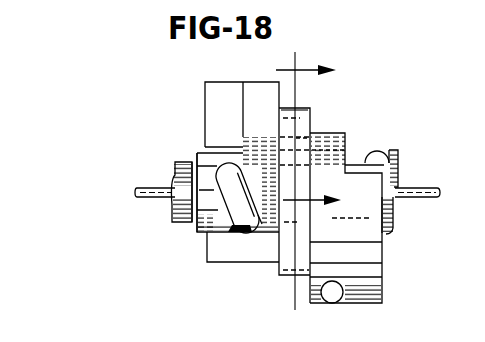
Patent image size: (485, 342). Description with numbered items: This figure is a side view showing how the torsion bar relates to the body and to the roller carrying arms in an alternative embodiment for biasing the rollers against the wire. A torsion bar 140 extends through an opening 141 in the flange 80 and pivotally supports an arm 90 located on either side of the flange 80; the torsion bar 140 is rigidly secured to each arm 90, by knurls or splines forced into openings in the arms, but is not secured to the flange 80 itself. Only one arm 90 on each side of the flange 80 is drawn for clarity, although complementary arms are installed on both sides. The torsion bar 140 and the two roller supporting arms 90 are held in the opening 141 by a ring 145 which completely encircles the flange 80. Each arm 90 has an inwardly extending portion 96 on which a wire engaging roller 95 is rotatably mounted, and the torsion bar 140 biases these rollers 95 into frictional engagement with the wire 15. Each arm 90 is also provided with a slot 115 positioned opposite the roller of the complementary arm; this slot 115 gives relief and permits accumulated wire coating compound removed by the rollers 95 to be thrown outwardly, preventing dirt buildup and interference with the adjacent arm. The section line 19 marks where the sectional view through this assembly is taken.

The wire 15 is at (146, 189).
The section line 19- 19 is at (308, 183).
The flange 80 is at (304, 134).
The arm 90 is at (258, 84).
The wire engaging roller 95 is at (237, 206).
The inwardly extending portion 96 is at (274, 212).
The slot 115 is at (333, 293).
The torsion bar 140 is at (348, 152).
The opening 141 is at (313, 130).
The ring 145 is at (303, 107).